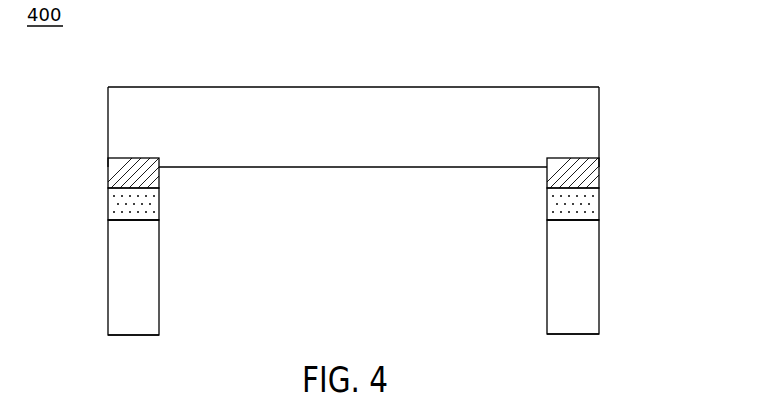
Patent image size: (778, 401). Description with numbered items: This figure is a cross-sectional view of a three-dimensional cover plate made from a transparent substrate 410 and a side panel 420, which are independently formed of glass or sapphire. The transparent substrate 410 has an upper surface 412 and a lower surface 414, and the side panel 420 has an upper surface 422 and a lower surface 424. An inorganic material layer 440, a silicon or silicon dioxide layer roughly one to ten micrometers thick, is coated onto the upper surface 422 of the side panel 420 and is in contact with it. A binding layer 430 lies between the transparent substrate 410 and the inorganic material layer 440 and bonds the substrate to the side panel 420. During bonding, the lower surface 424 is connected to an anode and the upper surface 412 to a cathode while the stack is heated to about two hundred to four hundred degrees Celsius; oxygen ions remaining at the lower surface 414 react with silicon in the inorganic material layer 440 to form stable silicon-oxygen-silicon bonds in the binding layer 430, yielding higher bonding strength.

The transparent substrate 410 is at (573, 117).
The upper surface of the transparent substrate 412 is at (440, 87).
The lower surface of the transparent substrate 414 is at (447, 168).
The side panel 420 is at (585, 277).
The upper surface of the side panel 422 is at (566, 222).
The lower surface of the side panel 424 is at (578, 335).
The binding layer 430 is at (600, 172).
The inorganic material layer 440 is at (600, 198).